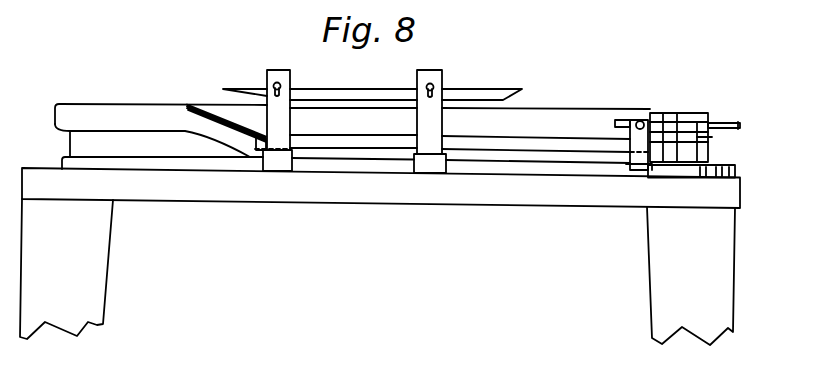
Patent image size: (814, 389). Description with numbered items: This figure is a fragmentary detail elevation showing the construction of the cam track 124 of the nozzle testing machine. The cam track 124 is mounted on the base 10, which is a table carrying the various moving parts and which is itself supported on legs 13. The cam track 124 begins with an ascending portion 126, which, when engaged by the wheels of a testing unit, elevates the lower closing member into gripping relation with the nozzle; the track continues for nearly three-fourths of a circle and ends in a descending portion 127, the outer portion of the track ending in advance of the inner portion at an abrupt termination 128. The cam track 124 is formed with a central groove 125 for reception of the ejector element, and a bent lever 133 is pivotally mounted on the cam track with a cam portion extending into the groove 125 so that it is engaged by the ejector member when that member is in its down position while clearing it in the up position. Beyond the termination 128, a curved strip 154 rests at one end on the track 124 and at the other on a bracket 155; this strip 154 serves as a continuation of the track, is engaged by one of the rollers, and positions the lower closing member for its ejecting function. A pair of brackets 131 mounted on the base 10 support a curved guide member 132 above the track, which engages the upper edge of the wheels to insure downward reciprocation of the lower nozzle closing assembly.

The base 10 is at (381, 188).
The legs 13 is at (377, 272).
The cam track 124 is at (123, 111).
The ascending portion 126 is at (219, 105).
The brackets 131 is at (283, 117).
The curved guide member 132 is at (384, 93).
The curved strip 154 is at (659, 120).
The bracket 155 is at (628, 133).
The central groove 125 is at (688, 113).
The abrupt termination 128 is at (708, 113).
The bent lever 133 is at (742, 125).
The descending portion 127 is at (713, 138).